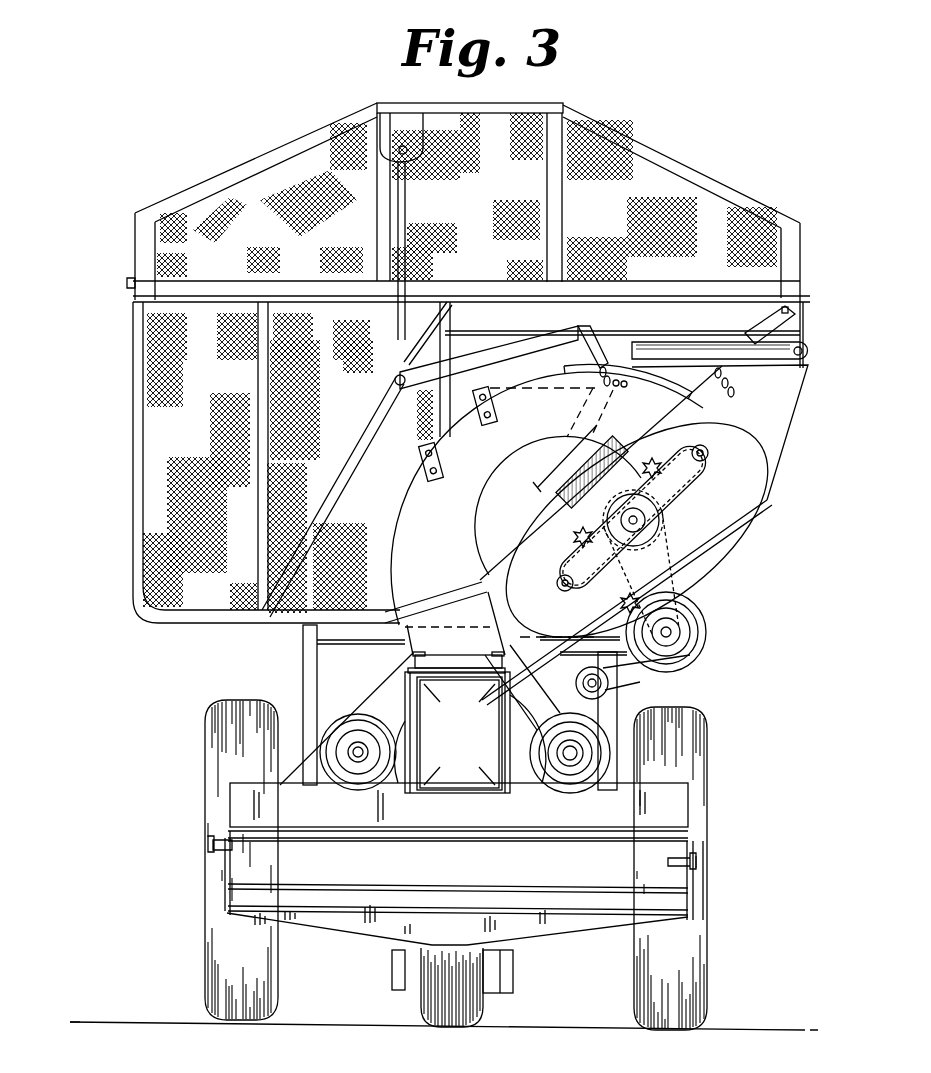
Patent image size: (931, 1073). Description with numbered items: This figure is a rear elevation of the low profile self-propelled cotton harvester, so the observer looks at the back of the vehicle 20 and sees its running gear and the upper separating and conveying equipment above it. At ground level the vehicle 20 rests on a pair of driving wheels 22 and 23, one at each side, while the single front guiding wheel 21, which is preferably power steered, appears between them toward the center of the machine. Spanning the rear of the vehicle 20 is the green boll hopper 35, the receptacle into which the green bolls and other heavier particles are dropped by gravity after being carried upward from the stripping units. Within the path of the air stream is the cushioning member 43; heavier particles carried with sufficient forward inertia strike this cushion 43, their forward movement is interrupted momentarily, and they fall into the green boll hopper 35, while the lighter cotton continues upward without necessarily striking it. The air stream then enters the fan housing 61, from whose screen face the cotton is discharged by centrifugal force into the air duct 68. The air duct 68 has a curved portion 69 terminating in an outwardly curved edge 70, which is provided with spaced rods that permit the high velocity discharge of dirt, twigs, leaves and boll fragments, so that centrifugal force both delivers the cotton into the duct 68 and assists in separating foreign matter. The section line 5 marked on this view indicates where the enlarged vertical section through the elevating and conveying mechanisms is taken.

The vehicle 20 is at (190, 775).
The front guiding wheel 21 is at (478, 1007).
The driving wheel 22 is at (207, 922).
The driving wheel 23 is at (708, 786).
The green boll hopper 35 is at (549, 880).
The cushioning member 43 is at (497, 780).
The fan housing 61 is at (540, 775).
The air duct 68 is at (403, 535).
The curved portion 69 is at (482, 535).
The outwardly curved edge 70 is at (402, 503).
The section line 5- 5 is at (460, 630).